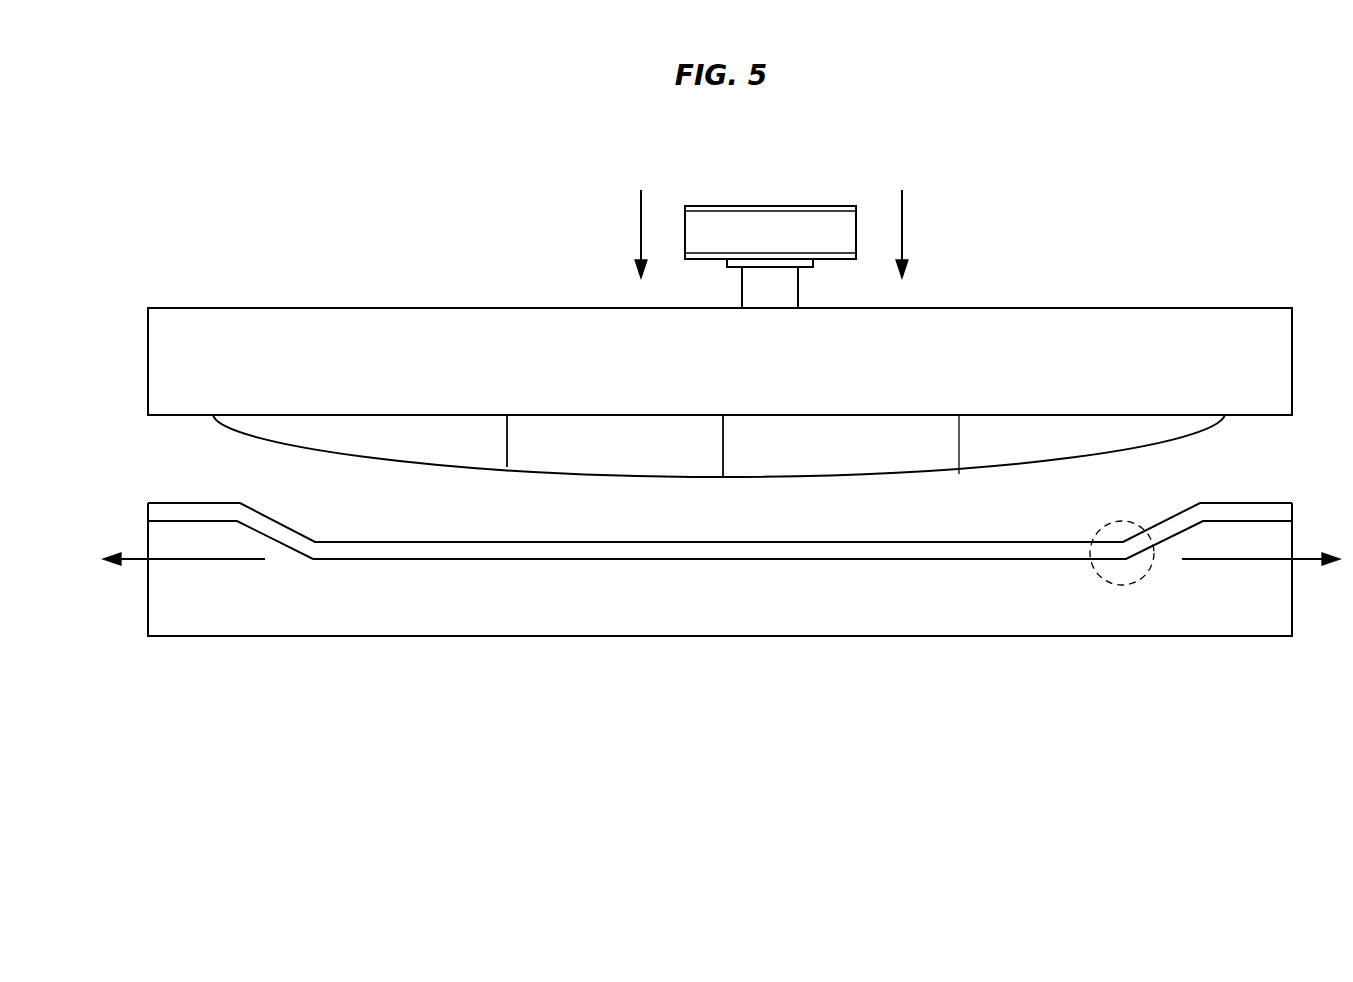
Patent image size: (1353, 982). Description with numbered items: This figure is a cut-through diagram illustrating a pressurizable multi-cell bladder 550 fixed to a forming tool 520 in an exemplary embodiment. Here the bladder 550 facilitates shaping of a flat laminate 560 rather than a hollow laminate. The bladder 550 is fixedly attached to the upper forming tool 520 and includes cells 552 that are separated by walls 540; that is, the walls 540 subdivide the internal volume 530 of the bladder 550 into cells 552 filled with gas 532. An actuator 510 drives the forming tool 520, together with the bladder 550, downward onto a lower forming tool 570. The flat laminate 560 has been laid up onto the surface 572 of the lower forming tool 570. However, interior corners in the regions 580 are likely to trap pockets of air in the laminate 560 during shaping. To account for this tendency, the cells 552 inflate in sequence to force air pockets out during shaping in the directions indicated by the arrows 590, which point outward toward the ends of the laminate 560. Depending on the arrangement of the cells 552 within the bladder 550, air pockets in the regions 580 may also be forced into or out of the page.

The actuator 510 is at (784, 204).
The forming tool 520 is at (443, 306).
The internal volume 530 is at (857, 460).
The gas 532 is at (690, 425).
The walls 540 is at (507, 450).
The bladder 550 is at (664, 494).
The cells 552 is at (446, 433).
The flat laminate 560 is at (148, 515).
The forming tool 570 is at (426, 698).
The surface 572 is at (539, 572).
The regions 580 is at (1138, 527).
The arrows 590 is at (213, 570).